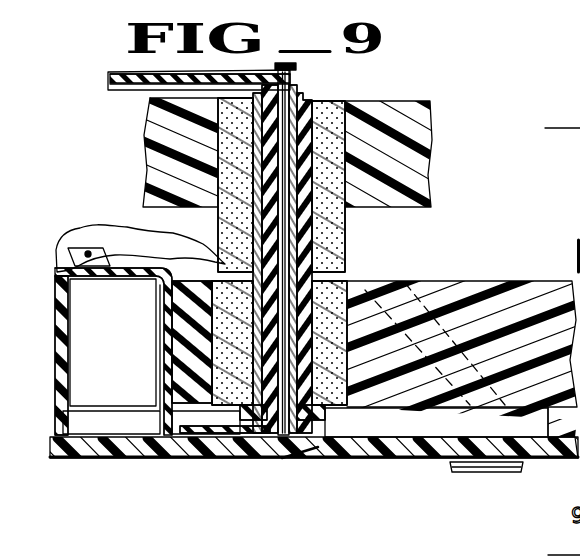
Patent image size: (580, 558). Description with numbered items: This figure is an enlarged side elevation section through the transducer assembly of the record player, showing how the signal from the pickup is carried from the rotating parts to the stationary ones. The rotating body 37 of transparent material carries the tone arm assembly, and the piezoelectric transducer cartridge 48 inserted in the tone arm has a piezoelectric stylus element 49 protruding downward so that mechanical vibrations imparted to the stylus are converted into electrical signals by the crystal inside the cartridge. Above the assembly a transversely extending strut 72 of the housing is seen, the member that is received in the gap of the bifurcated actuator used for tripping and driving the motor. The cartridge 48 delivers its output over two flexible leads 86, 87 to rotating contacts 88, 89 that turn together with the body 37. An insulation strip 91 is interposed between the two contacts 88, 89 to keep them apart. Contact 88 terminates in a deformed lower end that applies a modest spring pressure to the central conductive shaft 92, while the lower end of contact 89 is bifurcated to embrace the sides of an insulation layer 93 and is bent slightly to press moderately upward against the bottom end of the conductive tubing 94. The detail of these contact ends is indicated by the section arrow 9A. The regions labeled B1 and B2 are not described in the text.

The strut 72 is at (427, 157).
The central conductive shaft 92 is at (298, 100).
The conductive tubing 94 is at (314, 132).
The rotating body 37 is at (501, 250).
The upper insulating bushing B1 is at (340, 239).
The lower insulating bushing B2 is at (368, 296).
The flexible lead 86 is at (60, 240).
The flexible lead 87 is at (90, 252).
The rotating contact 88 is at (79, 270).
The rotating contact 89 is at (137, 259).
The insulation strip 91 is at (160, 413).
The piezoelectric transducer cartridge 48 is at (490, 422).
The piezoelectric stylus element 49 is at (497, 473).
The insulation layer 93 is at (272, 432).
The section line 9A is at (298, 455).